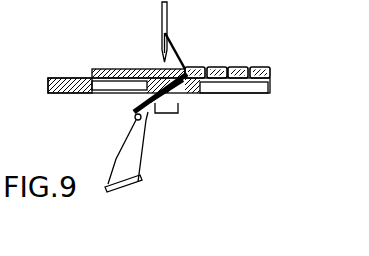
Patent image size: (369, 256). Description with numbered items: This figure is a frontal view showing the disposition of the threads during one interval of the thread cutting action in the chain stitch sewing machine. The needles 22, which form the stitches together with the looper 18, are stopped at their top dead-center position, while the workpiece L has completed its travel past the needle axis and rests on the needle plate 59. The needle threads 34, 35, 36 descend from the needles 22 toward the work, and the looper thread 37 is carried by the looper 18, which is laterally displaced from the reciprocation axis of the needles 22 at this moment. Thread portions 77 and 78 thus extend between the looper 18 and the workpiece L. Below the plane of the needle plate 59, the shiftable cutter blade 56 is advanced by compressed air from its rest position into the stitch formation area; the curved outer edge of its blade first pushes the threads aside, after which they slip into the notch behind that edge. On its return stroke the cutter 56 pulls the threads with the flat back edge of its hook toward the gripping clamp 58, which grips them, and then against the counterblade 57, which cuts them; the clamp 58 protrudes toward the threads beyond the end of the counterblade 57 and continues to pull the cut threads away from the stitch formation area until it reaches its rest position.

The needle plate 59 is at (64, 78).
The workpiece L is at (108, 70).
The needles 22 is at (162, 17).
The needle thread 34 is at (224, 44).
The needle thread 35 is at (224, 44).
The needle thread 36 is at (178, 56).
The looper thread 37 is at (135, 117).
The looper 18 is at (120, 157).
The thread portion 77 is at (153, 112).
The gripping clamp 58 is at (174, 113).
The cutter blade 56 is at (181, 108).
The counterblade 57 is at (188, 106).
The thread portion 78 is at (182, 95).